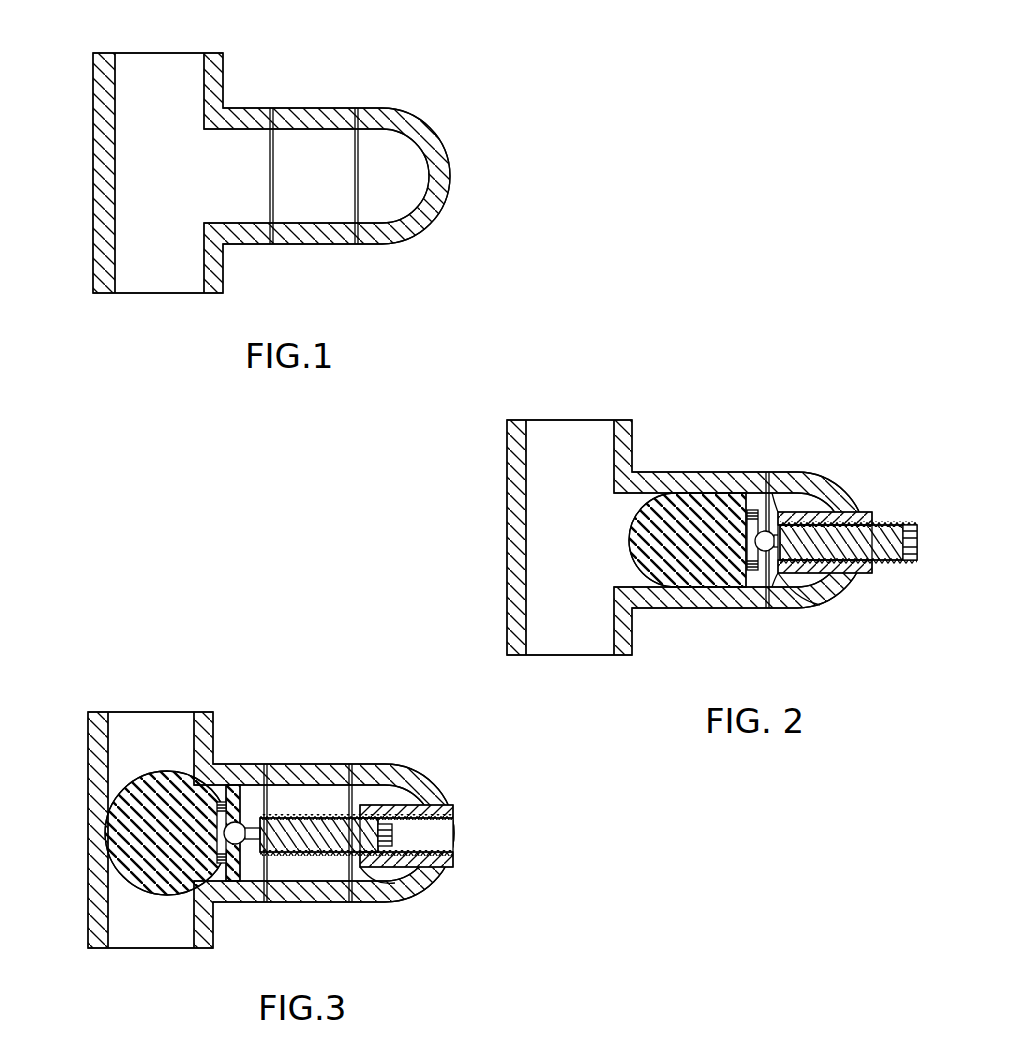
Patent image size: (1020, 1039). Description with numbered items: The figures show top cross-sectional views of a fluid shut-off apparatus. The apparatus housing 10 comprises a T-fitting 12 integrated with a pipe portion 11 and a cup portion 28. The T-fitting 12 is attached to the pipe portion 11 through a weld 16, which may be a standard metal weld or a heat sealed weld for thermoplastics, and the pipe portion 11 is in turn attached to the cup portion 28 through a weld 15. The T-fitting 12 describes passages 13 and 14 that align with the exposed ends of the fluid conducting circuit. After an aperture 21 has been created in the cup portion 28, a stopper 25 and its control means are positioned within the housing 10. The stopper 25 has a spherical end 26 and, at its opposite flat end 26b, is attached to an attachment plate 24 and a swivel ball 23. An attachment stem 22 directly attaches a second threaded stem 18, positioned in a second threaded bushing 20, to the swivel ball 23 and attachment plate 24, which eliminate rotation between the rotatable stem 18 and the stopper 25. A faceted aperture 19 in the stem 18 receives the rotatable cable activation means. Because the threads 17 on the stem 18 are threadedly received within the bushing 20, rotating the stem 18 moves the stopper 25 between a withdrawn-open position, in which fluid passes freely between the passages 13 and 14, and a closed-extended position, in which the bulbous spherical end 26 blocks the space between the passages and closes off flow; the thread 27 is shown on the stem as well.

In FIG. 1, the apparatus housing 10 is at (443, 142).
In FIG. 2, the apparatus housing 10 is at (828, 478).
In FIG. 1, the pipe portion 11 is at (290, 108).
In FIG. 2, the pipe portion 11 is at (746, 472).
In FIG. 3, the pipe portion 11 is at (336, 893).
In FIG. 1, the T-fitting 12 is at (218, 53).
In FIG. 2, the T-fitting 12 is at (635, 450).
In FIG. 3, the T-fitting 12 is at (97, 712).
In FIG. 1, the passage 13 is at (145, 63).
In FIG. 2, the passage 13 is at (563, 420).
In FIG. 3, the passage 13 is at (161, 722).
In FIG. 1, the passage 14 is at (150, 294).
In FIG. 2, the passage 14 is at (570, 648).
In FIG. 3, the passage 14 is at (141, 930).
In FIG. 1, the weld 15 is at (357, 108).
In FIG. 1, the weld 16 is at (271, 245).
In FIG. 2, the threads 17 is at (890, 525).
In FIG. 3, the threads 17 is at (285, 818).
In FIG. 2, the second threaded stem 18 is at (887, 560).
In FIG. 3, the second threaded stem 18 is at (378, 805).
In FIG. 2, the faceted aperture 19 is at (918, 542).
In FIG. 3, the faceted aperture 19 is at (392, 835).
In FIG. 2, the second threaded bushing 20 is at (866, 574).
In FIG. 3, the second threaded bushing 20 is at (453, 868).
In FIG. 2, the aperture 21 is at (858, 513).
In FIG. 3, the aperture 21 is at (441, 805).
In FIG. 2, the attachment stem 22 is at (778, 553).
In FIG. 3, the attachment stem 22 is at (305, 882).
In FIG. 2, the swivel ball 23 is at (756, 590).
In FIG. 3, the swivel ball 23 is at (250, 882).
In FIG. 2, the attachment plate 24 is at (727, 604).
In FIG. 3, the attachment plate 24 is at (223, 882).
In FIG. 2, the stopper 25 is at (700, 500).
In FIG. 3, the stopper 25 is at (170, 882).
In FIG. 2, the spherical end 26 is at (628, 543).
In FIG. 3, the spherical end 26 is at (177, 772).
In FIG. 2, the flat end 26b is at (782, 477).
In FIG. 2, the bolt thread 27 is at (912, 560).
In FIG. 3, the bolt thread 27 is at (308, 815).
In FIG. 1, the cup portion 28 is at (415, 236).
In FIG. 3, the cup portion 28 is at (418, 776).